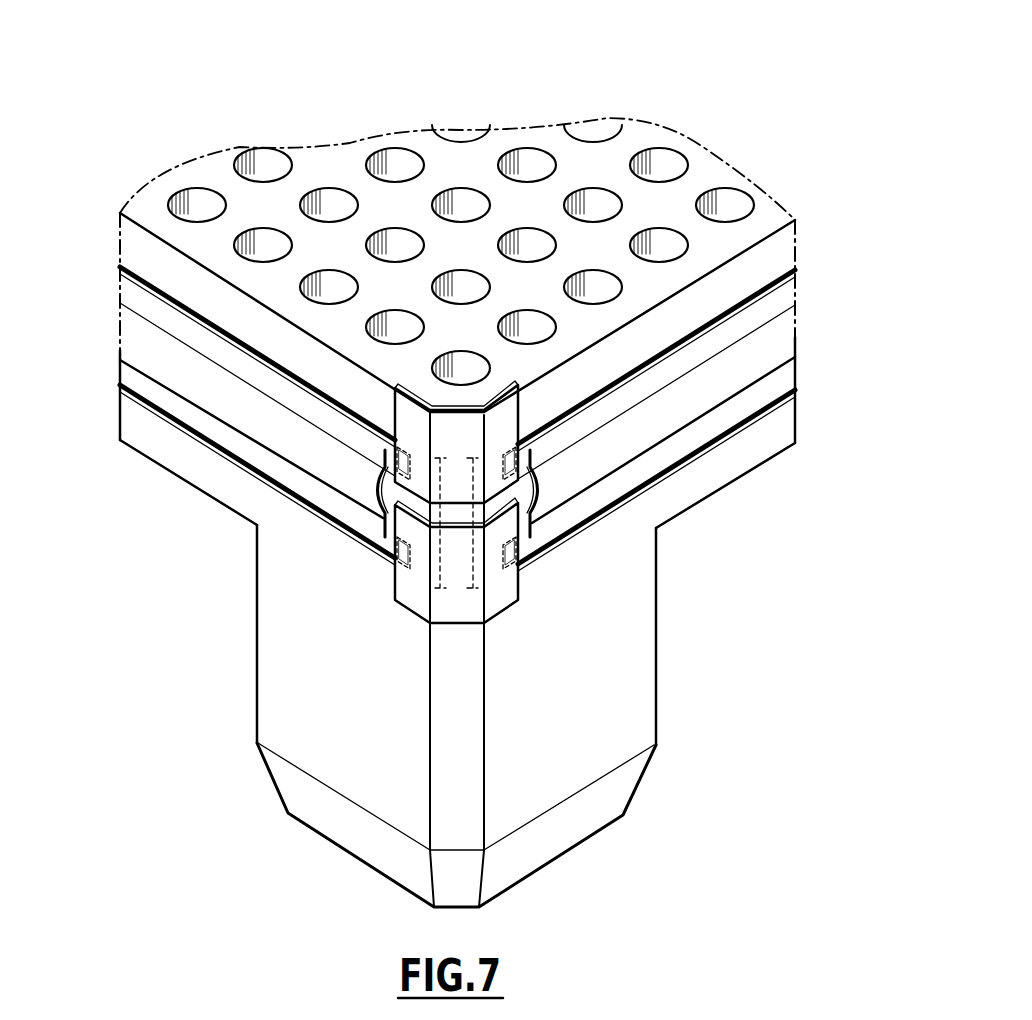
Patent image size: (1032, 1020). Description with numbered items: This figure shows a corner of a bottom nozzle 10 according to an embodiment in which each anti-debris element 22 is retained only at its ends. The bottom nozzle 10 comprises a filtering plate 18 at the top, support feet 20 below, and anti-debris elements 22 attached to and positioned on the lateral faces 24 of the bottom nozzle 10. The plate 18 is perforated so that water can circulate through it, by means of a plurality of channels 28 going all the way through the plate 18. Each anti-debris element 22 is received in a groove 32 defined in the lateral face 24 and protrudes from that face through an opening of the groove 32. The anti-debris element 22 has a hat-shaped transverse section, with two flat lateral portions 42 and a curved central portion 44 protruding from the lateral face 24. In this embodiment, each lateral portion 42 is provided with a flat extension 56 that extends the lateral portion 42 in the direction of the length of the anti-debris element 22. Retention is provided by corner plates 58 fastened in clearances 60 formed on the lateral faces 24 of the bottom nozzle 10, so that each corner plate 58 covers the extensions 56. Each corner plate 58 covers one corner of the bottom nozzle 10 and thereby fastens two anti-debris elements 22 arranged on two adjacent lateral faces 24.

The bottom nozzle 10 is at (686, 120).
The filtering plate 18 is at (538, 143).
The support feet 20 is at (530, 803).
The anti-debris element 22 is at (110, 333).
The lateral face 24 is at (329, 662).
The channels 28 is at (330, 203).
The groove 32 is at (381, 500).
The flat lateral portion 42 is at (133, 288).
The curved central portion 44 is at (142, 348).
The flat extension 56 is at (392, 463).
The corner plate 58 is at (505, 415).
The clearance 60 is at (412, 397).